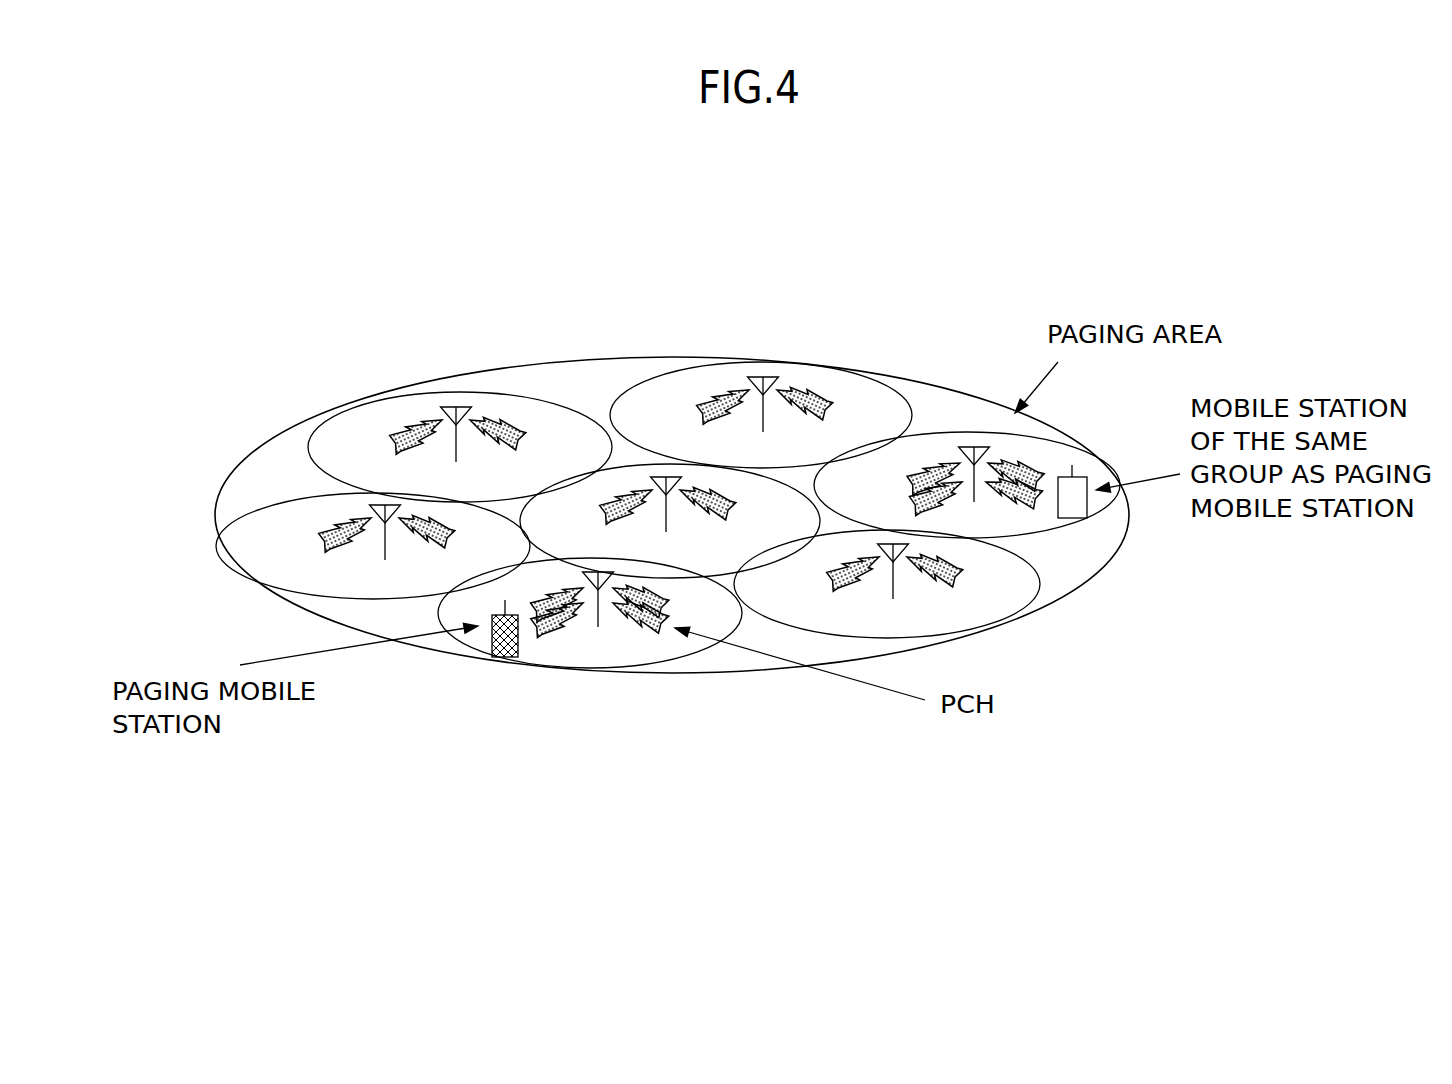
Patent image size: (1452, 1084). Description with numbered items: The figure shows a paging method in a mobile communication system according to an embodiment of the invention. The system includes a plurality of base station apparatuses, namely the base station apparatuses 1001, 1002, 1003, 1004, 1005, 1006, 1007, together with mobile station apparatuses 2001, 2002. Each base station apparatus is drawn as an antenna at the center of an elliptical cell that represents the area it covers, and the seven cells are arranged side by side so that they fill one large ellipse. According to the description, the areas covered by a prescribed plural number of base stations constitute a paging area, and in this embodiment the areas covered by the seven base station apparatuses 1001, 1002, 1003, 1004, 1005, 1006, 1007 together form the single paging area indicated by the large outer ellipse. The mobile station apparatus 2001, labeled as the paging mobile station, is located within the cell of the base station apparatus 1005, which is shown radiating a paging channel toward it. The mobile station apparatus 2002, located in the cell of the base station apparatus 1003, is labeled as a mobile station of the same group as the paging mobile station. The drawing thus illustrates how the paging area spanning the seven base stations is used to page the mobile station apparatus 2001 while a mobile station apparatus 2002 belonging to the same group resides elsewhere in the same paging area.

The base station apparatus 1001 is at (679, 482).
The base station apparatus 1002 is at (777, 385).
The base station apparatus 1003 is at (987, 453).
The base station apparatus 1004 is at (900, 553).
The base station apparatus 1005 is at (603, 590).
The base station apparatus 1006 is at (377, 508).
The base station apparatus 1007 is at (467, 414).
The mobile station apparatus 2001 is at (520, 643).
The mobile station apparatus 2002 is at (1087, 497).